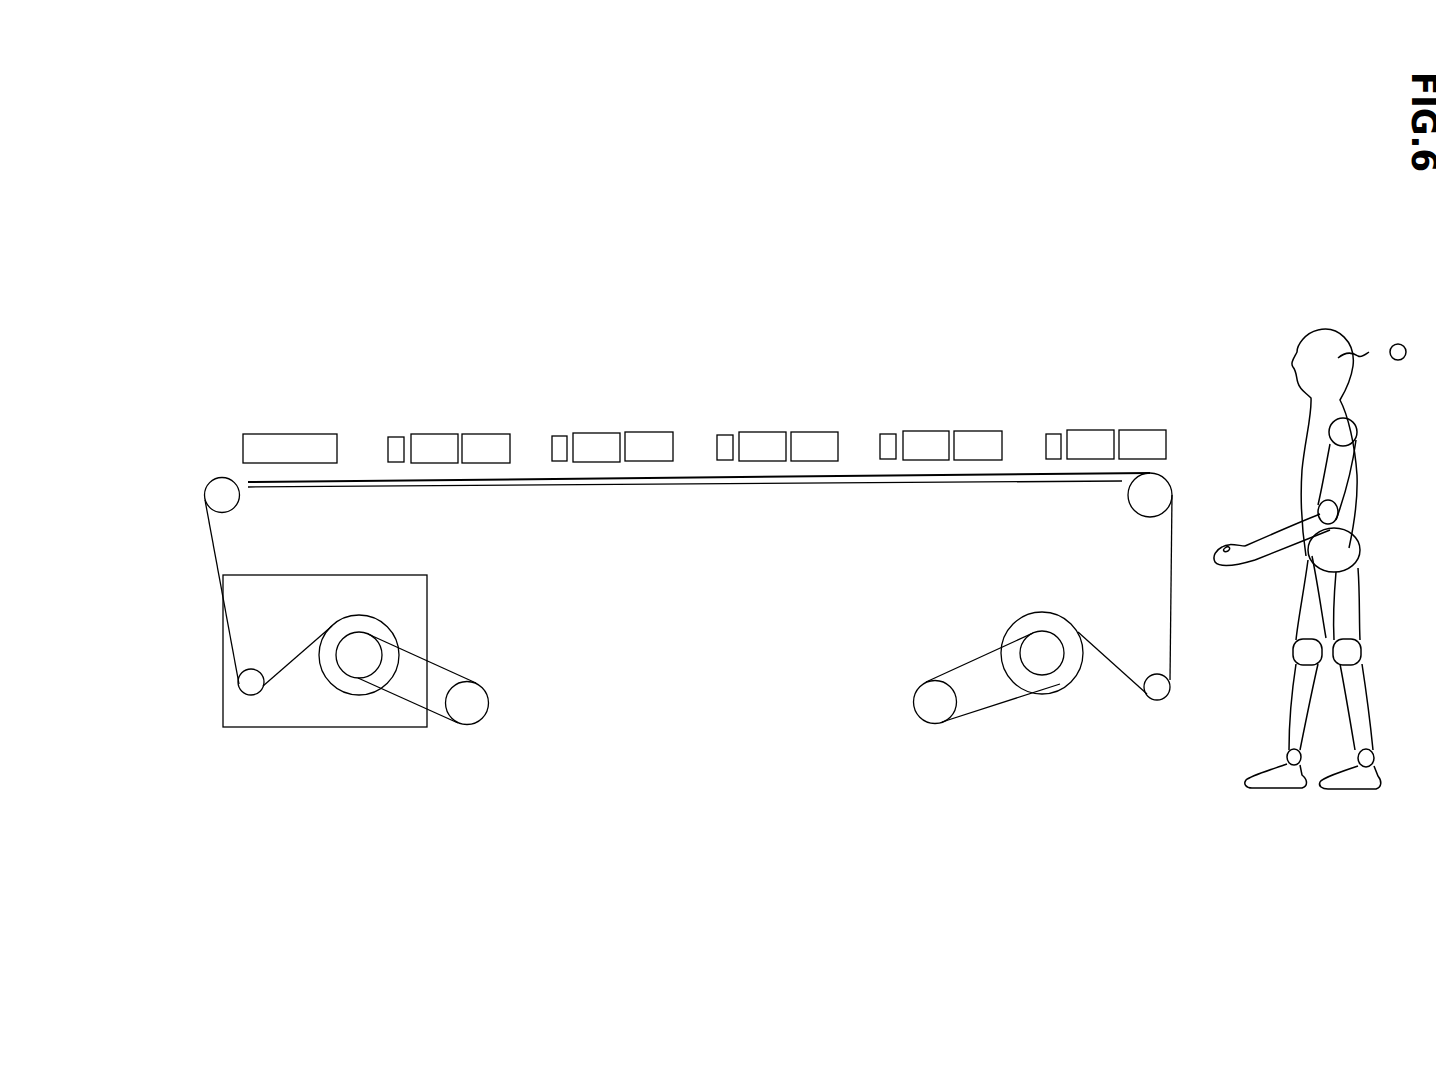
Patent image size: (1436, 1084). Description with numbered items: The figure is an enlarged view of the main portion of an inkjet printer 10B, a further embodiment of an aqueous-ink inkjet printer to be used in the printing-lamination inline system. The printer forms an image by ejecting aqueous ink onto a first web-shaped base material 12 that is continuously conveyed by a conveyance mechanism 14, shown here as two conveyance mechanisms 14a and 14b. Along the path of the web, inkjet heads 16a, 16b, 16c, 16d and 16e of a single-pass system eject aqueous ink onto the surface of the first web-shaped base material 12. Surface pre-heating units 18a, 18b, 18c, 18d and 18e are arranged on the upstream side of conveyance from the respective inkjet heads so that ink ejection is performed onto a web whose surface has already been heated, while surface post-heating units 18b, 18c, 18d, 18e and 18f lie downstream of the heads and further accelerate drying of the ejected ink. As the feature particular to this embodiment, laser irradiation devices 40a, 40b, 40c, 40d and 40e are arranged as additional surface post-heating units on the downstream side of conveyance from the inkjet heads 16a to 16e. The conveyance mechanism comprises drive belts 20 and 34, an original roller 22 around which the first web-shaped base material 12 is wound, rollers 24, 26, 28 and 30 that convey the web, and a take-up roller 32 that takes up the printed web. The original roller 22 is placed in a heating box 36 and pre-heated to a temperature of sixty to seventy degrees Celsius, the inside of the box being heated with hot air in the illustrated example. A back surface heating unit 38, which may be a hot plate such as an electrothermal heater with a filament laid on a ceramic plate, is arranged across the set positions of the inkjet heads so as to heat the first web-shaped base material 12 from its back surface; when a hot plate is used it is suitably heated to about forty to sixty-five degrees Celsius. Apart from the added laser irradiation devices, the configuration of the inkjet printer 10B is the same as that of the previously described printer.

The inkjet printer 10B is at (1213, 241).
The first web-shaped base material 12 is at (1153, 475).
The conveyance mechanism 14 is at (701, 743).
The conveyance mechanism 14a is at (477, 720).
The conveyance mechanism 14b is at (930, 718).
The inkjet head 16a is at (397, 445).
The inkjet head 16b is at (560, 447).
The inkjet head 16c is at (725, 445).
The inkjet head 16d is at (887, 445).
The inkjet head 16e is at (1055, 445).
The surface pre-heating unit 18a is at (288, 447).
The surface pre-heating unit 18b is at (480, 445).
The surface pre-heating unit 18c is at (650, 445).
The surface pre-heating unit 18d is at (813, 443).
The surface pre-heating unit 18e is at (972, 445).
The surface post-heating unit 18f is at (1140, 437).
The drive belt 20 is at (448, 665).
The original roller 22 is at (358, 670).
The roller 24 is at (243, 685).
The roller 26 is at (217, 495).
The roller 28 is at (1147, 495).
The roller 30 is at (1157, 687).
The take-up roller 32 is at (1053, 662).
The drive belt 34 is at (950, 675).
The heating box 36 is at (428, 592).
The back surface heating unit 38 is at (688, 480).
The laser irradiation device 40a is at (440, 440).
The laser irradiation device 40b is at (605, 440).
The laser irradiation device 40c is at (765, 438).
The laser irradiation device 40d is at (937, 438).
The laser irradiation device 40e is at (1097, 437).